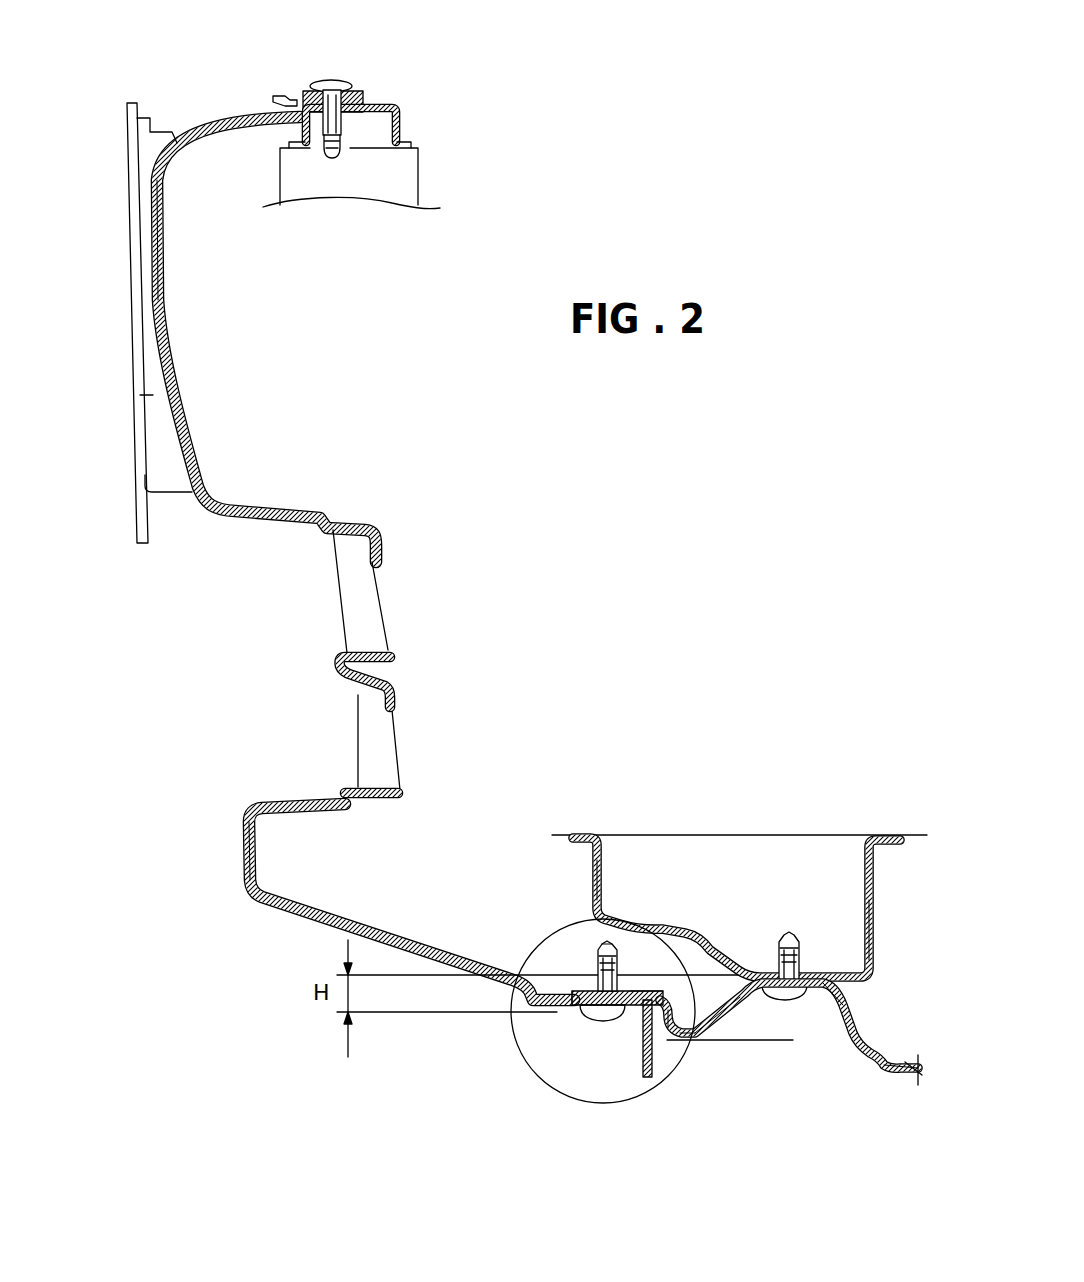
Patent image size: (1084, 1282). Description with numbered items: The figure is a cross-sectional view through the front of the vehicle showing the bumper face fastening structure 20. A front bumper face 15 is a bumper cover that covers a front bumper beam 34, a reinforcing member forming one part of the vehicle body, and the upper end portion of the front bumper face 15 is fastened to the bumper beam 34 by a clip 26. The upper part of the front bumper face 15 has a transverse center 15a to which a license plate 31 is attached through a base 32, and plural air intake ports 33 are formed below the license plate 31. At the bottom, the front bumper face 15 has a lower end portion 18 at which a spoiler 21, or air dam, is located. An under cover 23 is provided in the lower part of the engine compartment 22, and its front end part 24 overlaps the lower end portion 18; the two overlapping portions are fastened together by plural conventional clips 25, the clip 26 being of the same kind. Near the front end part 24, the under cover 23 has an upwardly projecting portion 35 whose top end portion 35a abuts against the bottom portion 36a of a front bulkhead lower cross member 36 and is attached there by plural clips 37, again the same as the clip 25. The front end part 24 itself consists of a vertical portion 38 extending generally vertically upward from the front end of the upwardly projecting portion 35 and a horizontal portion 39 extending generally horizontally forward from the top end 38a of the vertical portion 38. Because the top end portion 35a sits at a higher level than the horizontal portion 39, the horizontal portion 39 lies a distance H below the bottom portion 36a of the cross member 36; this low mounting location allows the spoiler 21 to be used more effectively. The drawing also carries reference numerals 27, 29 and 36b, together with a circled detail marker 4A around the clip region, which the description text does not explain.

The front bumper face 15 is at (240, 815).
The transverse center 15a is at (155, 222).
The lower end portion 18 is at (588, 1023).
The bumper face fastening structure 20 is at (363, 1132).
The spoiler 21 is at (636, 1060).
The engine compartment 22 is at (778, 668).
The under cover 23 is at (880, 1078).
The front end part 24 is at (636, 968).
The clip 25 is at (598, 946).
The clip 26 is at (343, 78).
The clip flange 27 is at (646, 992).
The bent portion 29 is at (682, 1022).
The license plate 31 is at (130, 277).
The base 32 is at (140, 395).
The air intake ports 33 is at (360, 655).
The front bumper beam 34 is at (398, 122).
The upwardly projecting portion 35 is at (846, 1015).
The top end portion 35a is at (834, 978).
The front bulkhead lower cross member 36 is at (601, 852).
The bottom portion 36a is at (862, 957).
The front wall of panel 36b is at (590, 878).
The clip 37 is at (806, 930).
The vertical portion 38 is at (672, 1010).
The top end 38a is at (660, 1016).
The horizontal portion 39 is at (575, 1000).
The detail view circle 4A is at (512, 1037).